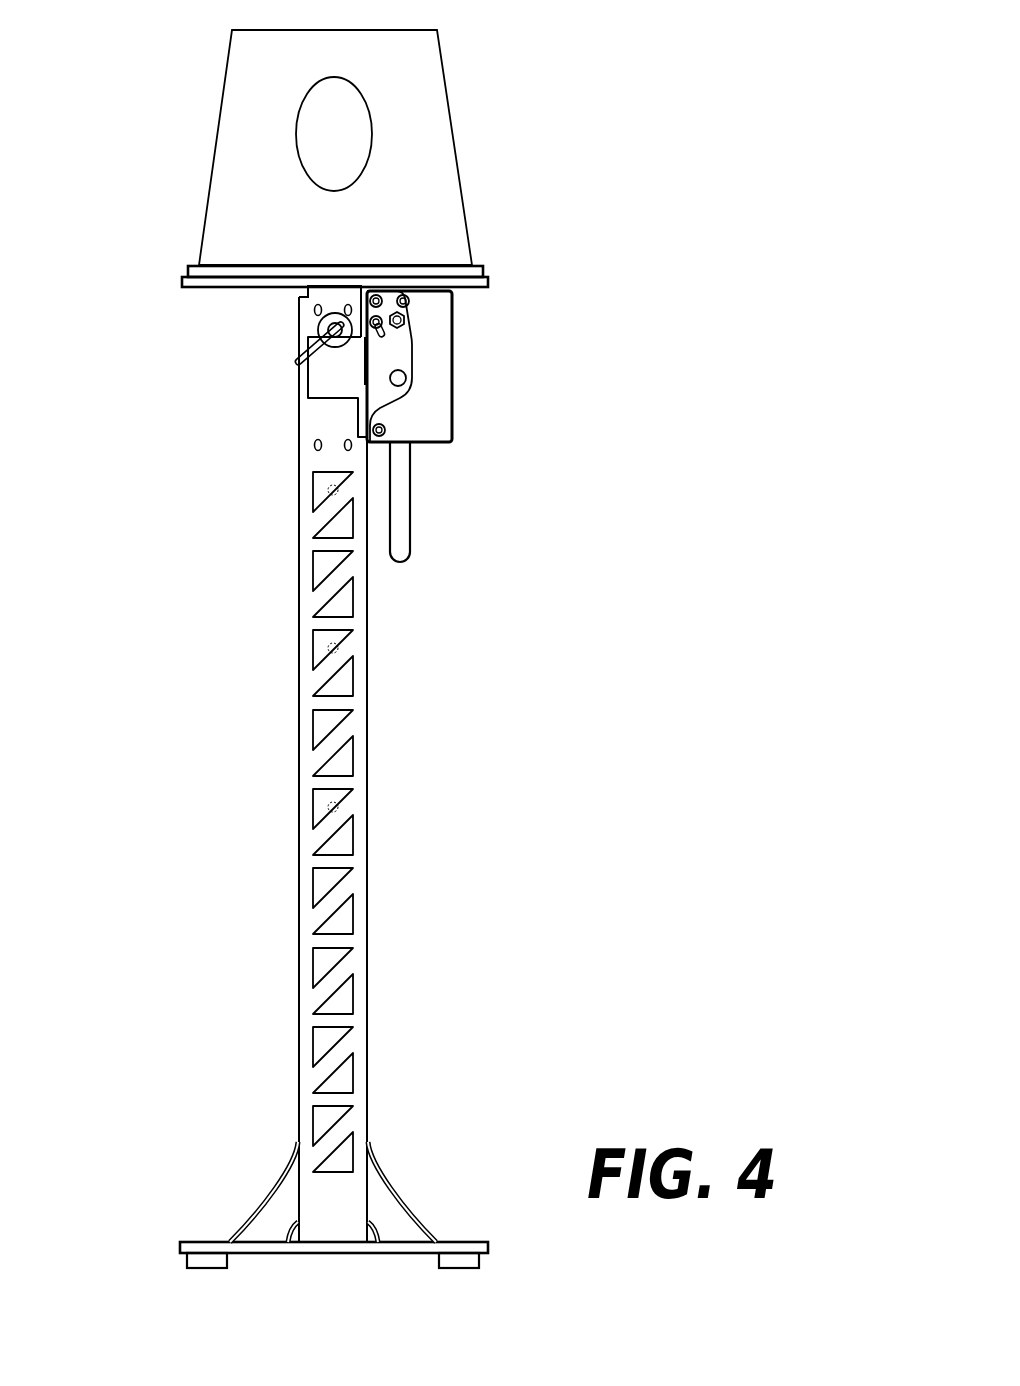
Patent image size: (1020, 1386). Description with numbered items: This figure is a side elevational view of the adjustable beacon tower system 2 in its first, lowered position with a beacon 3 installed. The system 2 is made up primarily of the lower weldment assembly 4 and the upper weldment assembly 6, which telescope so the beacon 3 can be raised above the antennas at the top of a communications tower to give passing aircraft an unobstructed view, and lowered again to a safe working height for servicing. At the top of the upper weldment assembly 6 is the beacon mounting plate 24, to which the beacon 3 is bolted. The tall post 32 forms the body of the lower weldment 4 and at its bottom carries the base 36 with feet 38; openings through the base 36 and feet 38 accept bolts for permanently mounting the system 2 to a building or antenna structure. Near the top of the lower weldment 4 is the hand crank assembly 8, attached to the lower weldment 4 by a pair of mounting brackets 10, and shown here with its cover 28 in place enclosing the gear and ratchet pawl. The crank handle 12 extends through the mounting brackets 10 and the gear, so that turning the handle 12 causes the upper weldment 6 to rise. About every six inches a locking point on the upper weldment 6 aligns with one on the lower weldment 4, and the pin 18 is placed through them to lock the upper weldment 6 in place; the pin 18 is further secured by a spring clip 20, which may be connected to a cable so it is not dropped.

The beacon tower system 2 is at (692, 78).
The beacon 3 is at (454, 145).
The lower weldment assembly 4 is at (402, 872).
The upper weldment assembly 6 is at (150, 255).
The hand crank assembly 8 is at (517, 323).
The mounting brackets 10 is at (320, 386).
The crank handle 12 is at (409, 491).
The pin 18 is at (322, 320).
The spring clip 20 is at (291, 362).
The beacon mounting plate 24 is at (484, 281).
The cover 28 is at (450, 359).
The post 32 is at (368, 972).
The base 36 is at (198, 1242).
The feet 38 is at (437, 1254).